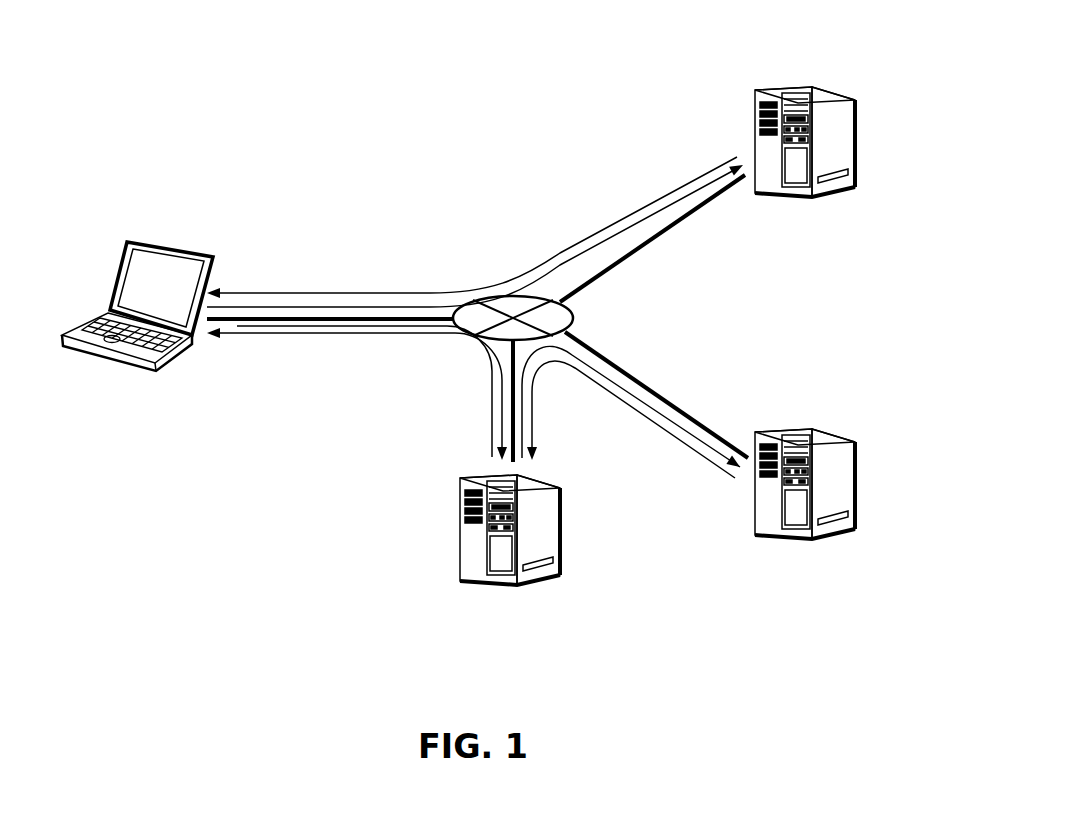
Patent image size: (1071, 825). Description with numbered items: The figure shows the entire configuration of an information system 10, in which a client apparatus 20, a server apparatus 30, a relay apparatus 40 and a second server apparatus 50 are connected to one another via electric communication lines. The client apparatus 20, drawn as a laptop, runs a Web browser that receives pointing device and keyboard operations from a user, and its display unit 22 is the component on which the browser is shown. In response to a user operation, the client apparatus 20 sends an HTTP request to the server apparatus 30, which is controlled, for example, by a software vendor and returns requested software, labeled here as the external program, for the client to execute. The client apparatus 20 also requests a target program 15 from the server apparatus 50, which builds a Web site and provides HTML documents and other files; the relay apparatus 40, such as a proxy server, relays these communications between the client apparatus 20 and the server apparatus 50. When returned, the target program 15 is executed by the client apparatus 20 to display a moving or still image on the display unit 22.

The information system 10 is at (574, 45).
The target program 15 is at (473, 404).
The client apparatus 20 is at (136, 284).
The display unit 22 is at (165, 260).
The server apparatus 30 is at (797, 88).
The relay apparatus 40 is at (565, 536).
The server apparatus 50 is at (809, 430).